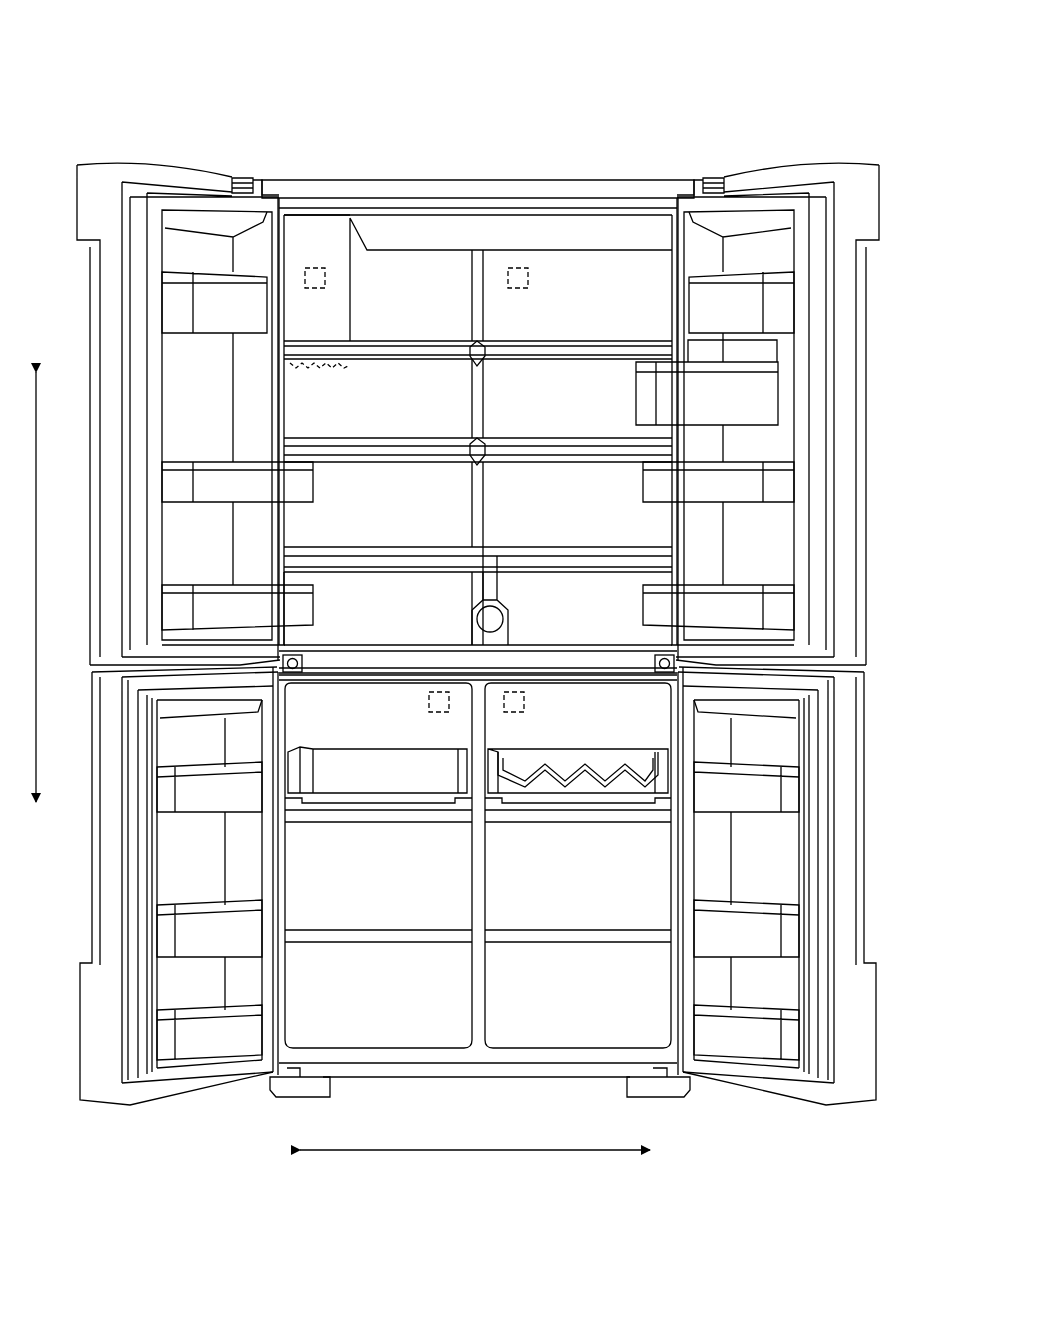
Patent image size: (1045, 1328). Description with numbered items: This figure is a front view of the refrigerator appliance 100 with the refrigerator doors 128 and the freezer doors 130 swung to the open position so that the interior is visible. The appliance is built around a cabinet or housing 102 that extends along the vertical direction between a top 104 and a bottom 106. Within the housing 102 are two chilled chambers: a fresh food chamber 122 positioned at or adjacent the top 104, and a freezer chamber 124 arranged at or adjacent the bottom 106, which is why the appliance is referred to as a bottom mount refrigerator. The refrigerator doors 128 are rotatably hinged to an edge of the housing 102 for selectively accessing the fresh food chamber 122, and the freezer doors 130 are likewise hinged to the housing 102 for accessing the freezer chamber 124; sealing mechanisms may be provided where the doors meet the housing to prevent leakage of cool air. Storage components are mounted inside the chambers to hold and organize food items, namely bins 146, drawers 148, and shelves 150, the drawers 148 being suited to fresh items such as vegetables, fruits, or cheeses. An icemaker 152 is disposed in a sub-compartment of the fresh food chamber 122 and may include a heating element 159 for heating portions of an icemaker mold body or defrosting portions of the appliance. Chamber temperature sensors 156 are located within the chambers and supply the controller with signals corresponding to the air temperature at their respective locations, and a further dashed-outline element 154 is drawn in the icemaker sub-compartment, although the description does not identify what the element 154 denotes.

The refrigerator appliance 100 is at (226, 72).
The housing 102 is at (410, 186).
The top 104 is at (508, 170).
The bottom 106 is at (477, 1080).
The fresh food chamber 122 is at (603, 282).
The freezer chamber 124 is at (590, 1017).
The refrigerator doors 128 is at (98, 183).
The freezer doors 130 is at (97, 1067).
The bins 146 is at (660, 382).
The drawers 148 is at (477, 757).
The shelves 150 is at (637, 340).
The icemaker 152 is at (315, 240).
The sensor 154 is at (325, 285).
The chamber temperature sensors 156 is at (516, 288).
The heating element 159 is at (352, 368).